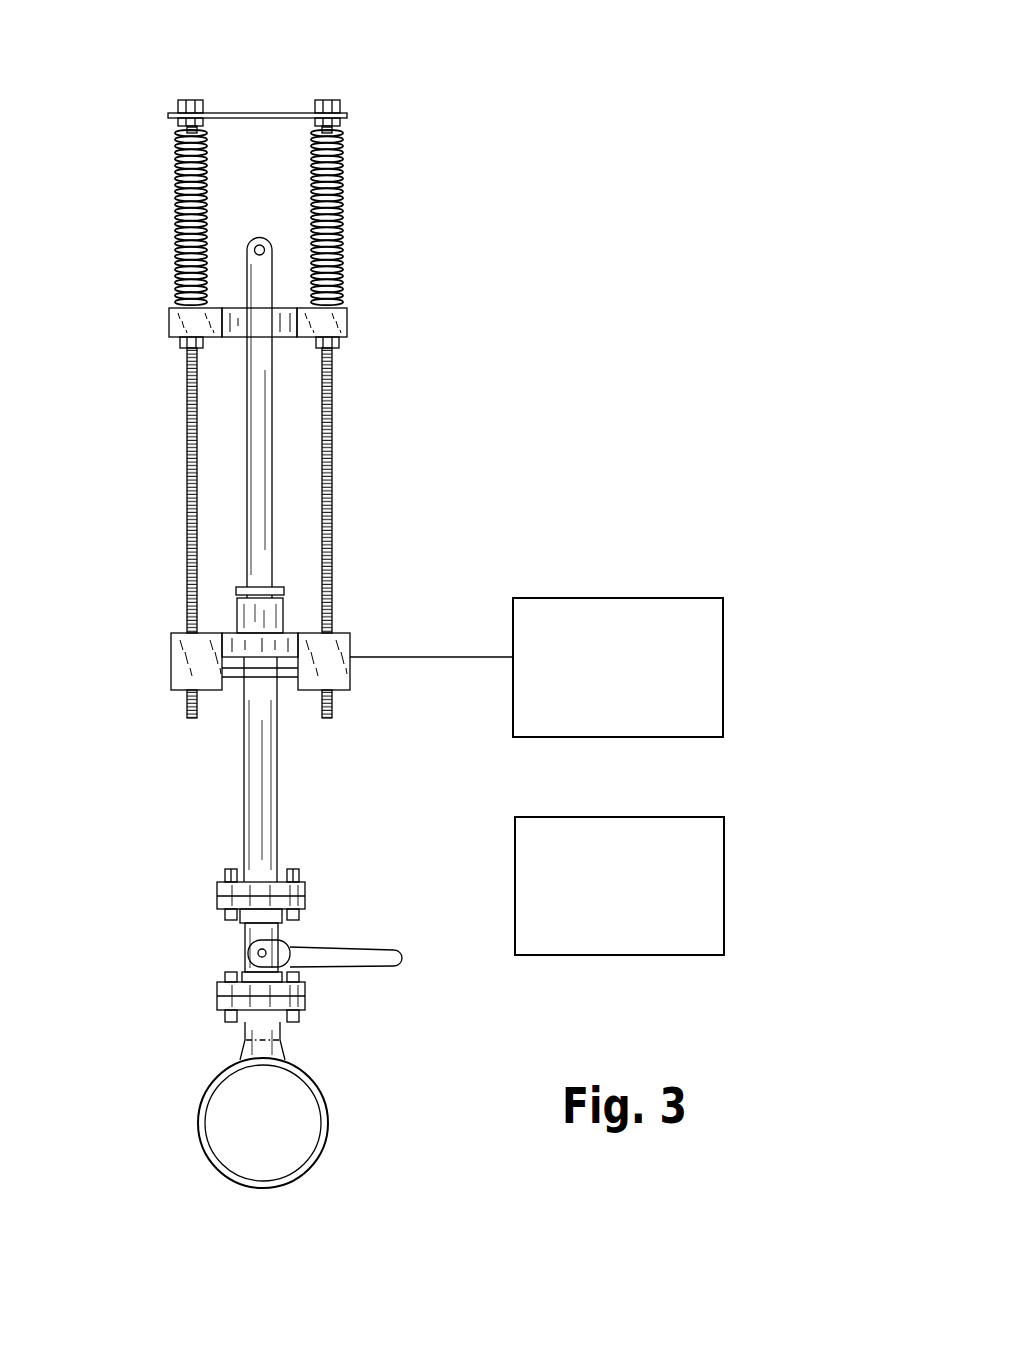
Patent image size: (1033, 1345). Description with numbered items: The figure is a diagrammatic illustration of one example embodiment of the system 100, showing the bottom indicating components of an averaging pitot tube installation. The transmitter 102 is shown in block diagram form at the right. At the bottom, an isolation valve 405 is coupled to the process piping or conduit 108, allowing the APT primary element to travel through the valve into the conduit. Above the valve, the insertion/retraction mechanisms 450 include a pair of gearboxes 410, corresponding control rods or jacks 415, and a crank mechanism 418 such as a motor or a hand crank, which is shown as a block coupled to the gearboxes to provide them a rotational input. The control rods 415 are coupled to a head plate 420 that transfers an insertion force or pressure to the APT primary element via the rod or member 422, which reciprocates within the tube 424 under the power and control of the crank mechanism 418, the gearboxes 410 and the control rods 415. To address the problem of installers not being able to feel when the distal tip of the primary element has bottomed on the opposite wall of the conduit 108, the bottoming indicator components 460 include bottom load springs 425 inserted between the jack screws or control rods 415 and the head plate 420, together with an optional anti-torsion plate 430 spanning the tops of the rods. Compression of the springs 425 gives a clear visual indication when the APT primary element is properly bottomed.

The system 100 is at (712, 77).
The transmitter 102 is at (619, 886).
The process piping or conduit 108 is at (205, 1100).
The isolation valve 405 is at (172, 938).
The gearboxes 410 is at (182, 634).
The control rods or jacks 415 is at (187, 438).
The crank mechanism 418 is at (618, 667).
The head plate 420 is at (345, 321).
The rod or member 422 is at (256, 524).
The tube 424 is at (253, 763).
The bottom load springs 425 is at (178, 208).
The anti-torsion plate 430 is at (262, 113).
The insertion/retraction mechanisms 450 is at (757, 577).
The bottoming indicator components 460 is at (498, 184).